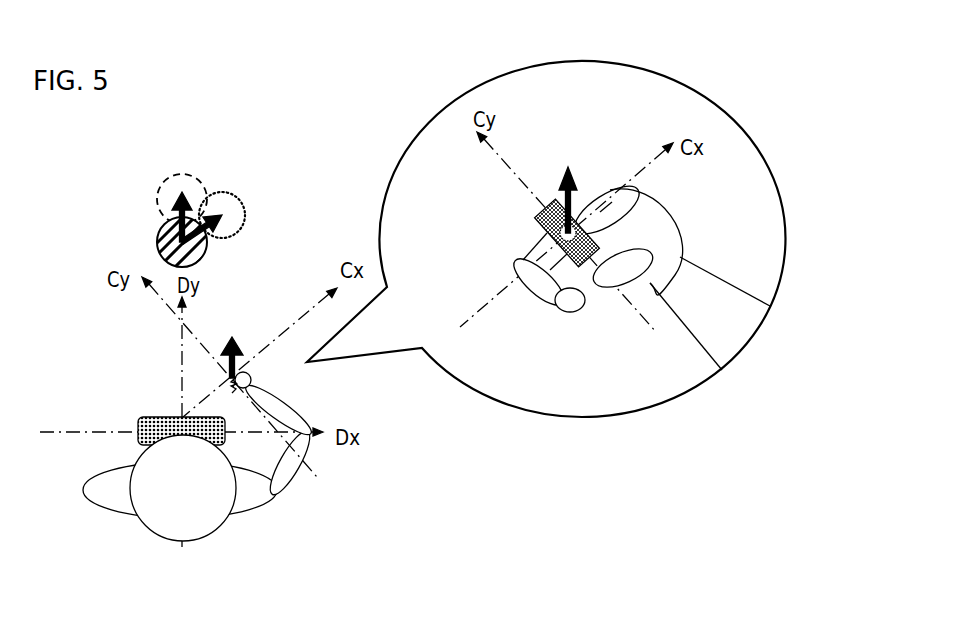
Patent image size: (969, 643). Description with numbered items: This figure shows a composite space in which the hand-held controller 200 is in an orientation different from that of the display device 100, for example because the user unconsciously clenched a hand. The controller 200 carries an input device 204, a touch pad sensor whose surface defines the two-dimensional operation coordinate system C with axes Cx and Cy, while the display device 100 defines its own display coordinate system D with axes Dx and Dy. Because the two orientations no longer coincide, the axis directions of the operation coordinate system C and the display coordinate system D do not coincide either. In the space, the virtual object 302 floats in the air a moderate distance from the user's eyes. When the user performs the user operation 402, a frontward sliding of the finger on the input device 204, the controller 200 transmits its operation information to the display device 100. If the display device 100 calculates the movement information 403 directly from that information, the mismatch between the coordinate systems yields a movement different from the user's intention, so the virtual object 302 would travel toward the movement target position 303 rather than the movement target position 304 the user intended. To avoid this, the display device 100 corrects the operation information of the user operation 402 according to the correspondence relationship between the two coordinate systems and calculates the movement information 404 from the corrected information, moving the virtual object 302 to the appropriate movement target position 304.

The display device 100 is at (137, 428).
The controller 200 is at (537, 220).
The input device 204 is at (585, 232).
The virtual object 302 is at (157, 243).
The movement target position 303 is at (242, 208).
The movement target position 304 is at (158, 190).
The user operation 402 is at (572, 164).
The movement information 403 is at (208, 228).
The movement information 404 is at (167, 210).